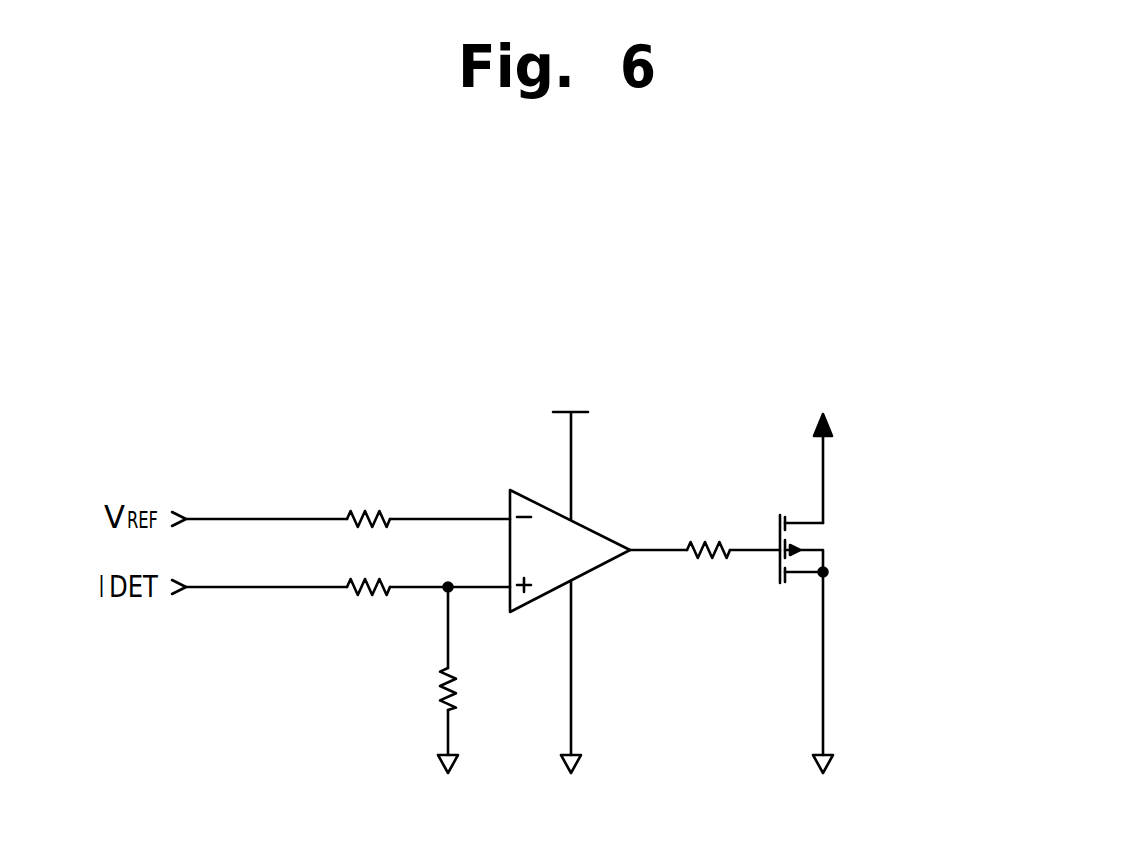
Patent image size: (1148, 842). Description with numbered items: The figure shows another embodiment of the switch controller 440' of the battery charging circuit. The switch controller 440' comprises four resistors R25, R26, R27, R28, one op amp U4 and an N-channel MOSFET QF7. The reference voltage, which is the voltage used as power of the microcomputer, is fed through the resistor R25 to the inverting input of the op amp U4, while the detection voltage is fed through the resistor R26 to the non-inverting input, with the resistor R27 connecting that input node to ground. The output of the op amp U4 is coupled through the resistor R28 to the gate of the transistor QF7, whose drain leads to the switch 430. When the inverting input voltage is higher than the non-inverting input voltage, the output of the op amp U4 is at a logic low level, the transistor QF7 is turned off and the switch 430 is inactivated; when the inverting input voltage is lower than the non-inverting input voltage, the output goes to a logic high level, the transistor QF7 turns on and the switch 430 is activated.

The switch controller 440' is at (257, 286).
The resistor R25 is at (369, 500).
The resistor R26 is at (369, 567).
The resistor R27 is at (477, 689).
The resistor R28 is at (710, 532).
The op amp U4 is at (604, 533).
The N-channel MOSFET QF7 is at (833, 549).
The switch 430 is at (827, 369).